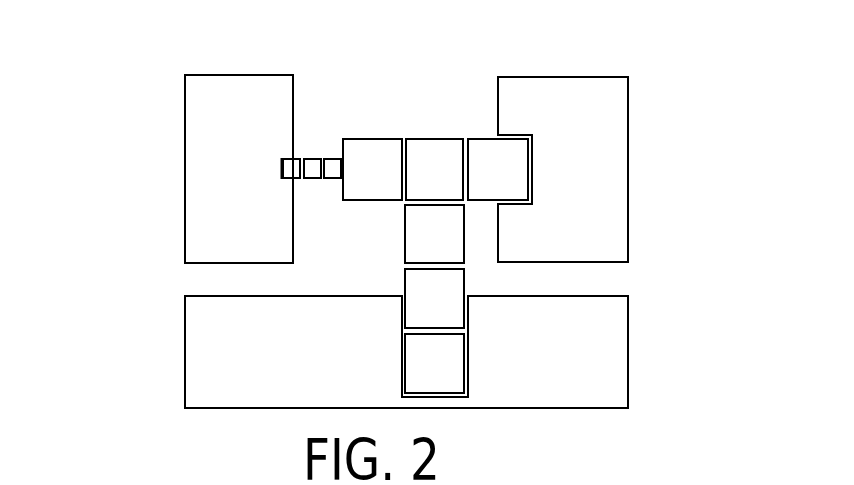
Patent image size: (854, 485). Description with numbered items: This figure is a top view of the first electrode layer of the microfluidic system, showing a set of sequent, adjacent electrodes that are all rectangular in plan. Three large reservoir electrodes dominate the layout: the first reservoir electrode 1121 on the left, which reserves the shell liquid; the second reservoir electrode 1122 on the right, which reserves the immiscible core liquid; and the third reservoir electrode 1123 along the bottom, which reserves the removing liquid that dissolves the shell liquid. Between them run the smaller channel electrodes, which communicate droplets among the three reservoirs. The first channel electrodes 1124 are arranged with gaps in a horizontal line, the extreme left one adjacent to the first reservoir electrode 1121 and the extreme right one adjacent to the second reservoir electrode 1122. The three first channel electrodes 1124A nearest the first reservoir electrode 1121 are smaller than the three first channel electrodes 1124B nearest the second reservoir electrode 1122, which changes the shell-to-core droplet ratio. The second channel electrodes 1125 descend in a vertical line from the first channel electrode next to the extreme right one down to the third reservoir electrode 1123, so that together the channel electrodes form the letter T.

The first reservoir electrode 1121 is at (190, 157).
The second reservoir electrode 1122 is at (613, 157).
The third reservoir electrode 1123 is at (620, 346).
The first channel electrodes 1124 is at (405, 106).
The first channel electrodes close to the first reservoir electrode 1124A is at (292, 166).
The first channel electrodes close to the second reservoir electrode 1124B is at (495, 153).
The second channel electrodes 1125 is at (428, 360).